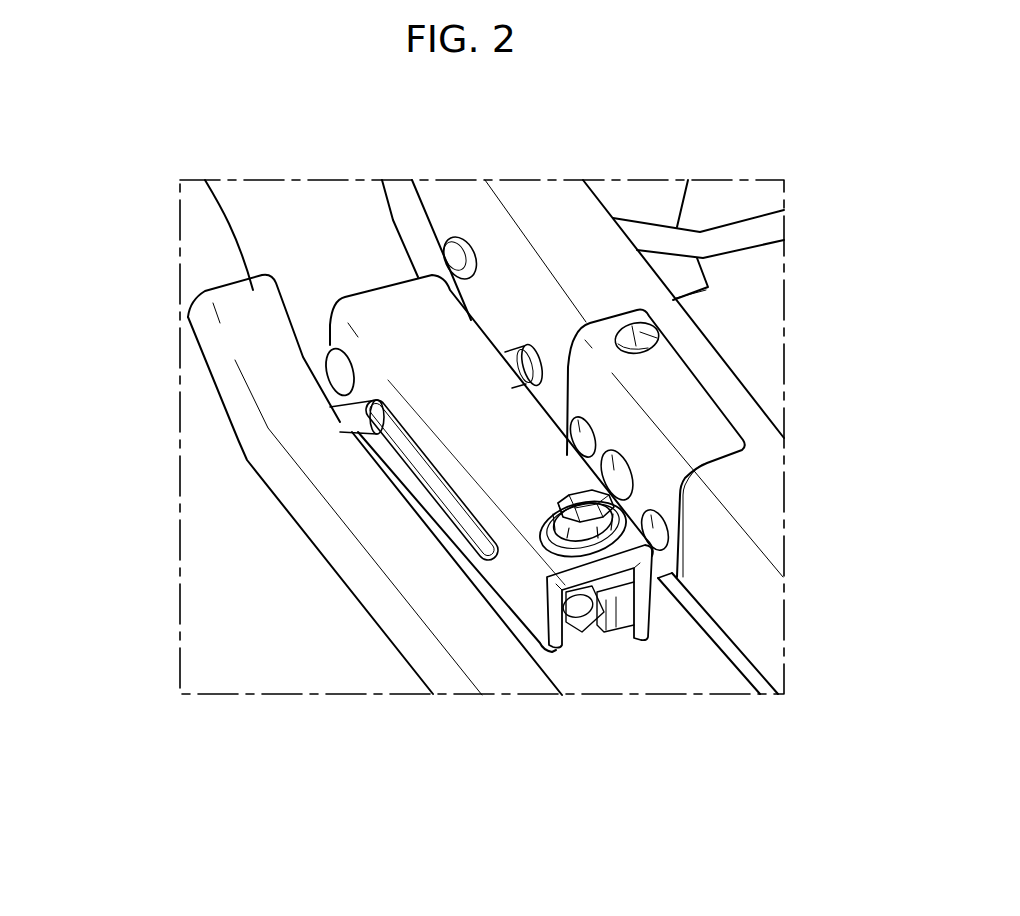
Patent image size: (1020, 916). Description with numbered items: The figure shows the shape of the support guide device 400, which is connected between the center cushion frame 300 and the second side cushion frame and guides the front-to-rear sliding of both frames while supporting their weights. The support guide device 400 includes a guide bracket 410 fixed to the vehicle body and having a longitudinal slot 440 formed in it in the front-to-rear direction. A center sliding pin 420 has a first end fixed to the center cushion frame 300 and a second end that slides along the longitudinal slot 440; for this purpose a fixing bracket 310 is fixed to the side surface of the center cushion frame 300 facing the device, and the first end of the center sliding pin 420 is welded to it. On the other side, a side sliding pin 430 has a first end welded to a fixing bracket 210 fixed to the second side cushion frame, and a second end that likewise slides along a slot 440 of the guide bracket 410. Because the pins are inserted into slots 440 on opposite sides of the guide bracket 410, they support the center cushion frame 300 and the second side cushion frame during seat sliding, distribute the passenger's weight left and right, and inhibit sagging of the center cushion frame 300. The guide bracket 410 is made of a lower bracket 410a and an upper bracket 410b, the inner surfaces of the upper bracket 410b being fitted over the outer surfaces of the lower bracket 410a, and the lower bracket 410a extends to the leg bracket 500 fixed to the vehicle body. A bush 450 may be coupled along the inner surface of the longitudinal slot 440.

The fixing bracket 210 is at (542, 200).
The center cushion frame 300 is at (197, 241).
The fixing bracket 310 is at (243, 346).
The support guide device 400 is at (357, 287).
The guide bracket 410 is at (572, 719).
The lower bracket 410a is at (628, 595).
The upper bracket 410b is at (523, 563).
The center sliding pin 420 is at (353, 415).
The side sliding pin 430 is at (523, 367).
The longitudinal slot 440 is at (407, 452).
The bush 450 is at (420, 498).
The leg bracket 500 is at (720, 640).